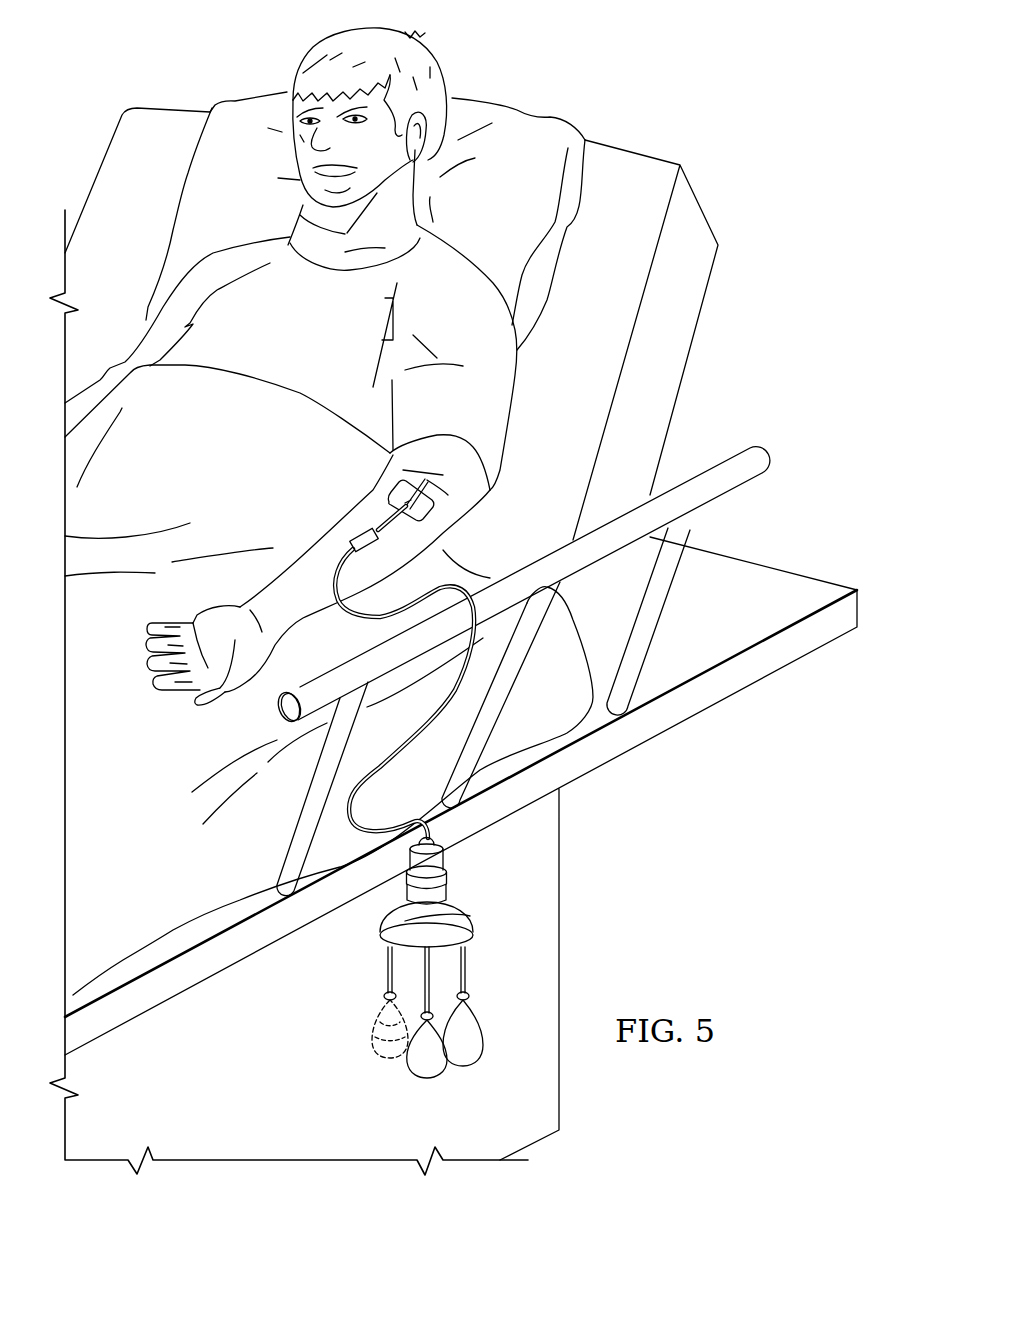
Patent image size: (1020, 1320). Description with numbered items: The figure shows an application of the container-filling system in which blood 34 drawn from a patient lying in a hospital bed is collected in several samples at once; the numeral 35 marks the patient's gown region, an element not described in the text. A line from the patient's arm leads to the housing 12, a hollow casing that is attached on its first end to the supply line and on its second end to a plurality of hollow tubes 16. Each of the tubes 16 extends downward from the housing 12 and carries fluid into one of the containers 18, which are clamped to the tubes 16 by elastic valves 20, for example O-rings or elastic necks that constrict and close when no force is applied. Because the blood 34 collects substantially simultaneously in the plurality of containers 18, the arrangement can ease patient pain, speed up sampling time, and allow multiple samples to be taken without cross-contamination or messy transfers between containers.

The housing 12 is at (461, 920).
The hollow tubes 16 is at (388, 967).
The containers 18 is at (468, 1052).
The elastic valves 20 is at (467, 1022).
The blood 34 is at (385, 1007).
The patient gown 35 is at (245, 250).